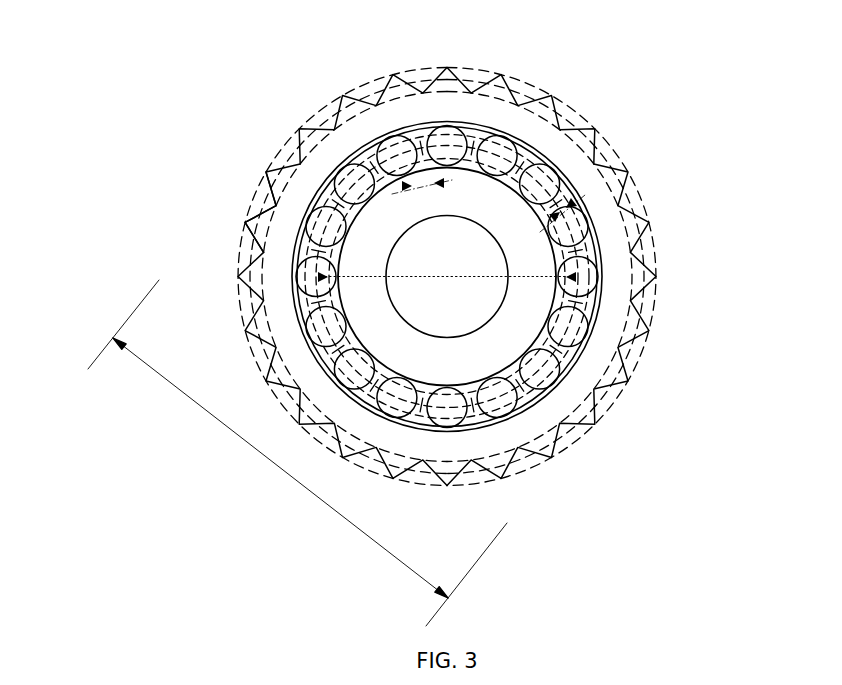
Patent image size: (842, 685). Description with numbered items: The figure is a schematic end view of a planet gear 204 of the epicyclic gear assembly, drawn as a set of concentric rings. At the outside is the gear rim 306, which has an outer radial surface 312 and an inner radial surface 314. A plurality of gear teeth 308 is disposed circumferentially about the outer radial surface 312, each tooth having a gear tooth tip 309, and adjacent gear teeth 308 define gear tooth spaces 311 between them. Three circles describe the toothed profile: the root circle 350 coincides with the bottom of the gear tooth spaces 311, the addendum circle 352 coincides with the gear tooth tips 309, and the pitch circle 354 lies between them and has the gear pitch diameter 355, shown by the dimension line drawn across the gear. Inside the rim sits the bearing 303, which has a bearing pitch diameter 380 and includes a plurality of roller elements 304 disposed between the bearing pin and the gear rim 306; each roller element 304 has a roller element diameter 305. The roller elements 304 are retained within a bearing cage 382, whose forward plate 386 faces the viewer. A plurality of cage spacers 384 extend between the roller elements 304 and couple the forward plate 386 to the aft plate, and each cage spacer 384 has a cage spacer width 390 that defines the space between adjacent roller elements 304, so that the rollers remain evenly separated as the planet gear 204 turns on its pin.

The planet gear 204 is at (144, 62).
The bearing 303 is at (349, 156).
The roller elements 304 is at (515, 152).
The roller element diameter 305 is at (565, 208).
The gear rim 306 is at (514, 125).
The gear teeth 308 is at (258, 222).
The gear tooth tip 309 is at (250, 195).
The gear tooth spaces 311 is at (264, 178).
The outer radial surface 312 is at (645, 330).
The inner radial surface 314 is at (337, 152).
The root circle 350 is at (477, 77).
The addendum circle 352 is at (548, 91).
The pitch circle 354 is at (515, 82).
The gear pitch diameter 355 is at (243, 442).
The bearing pitch diameter 380 is at (447, 280).
The bearing cage 382 is at (297, 238).
The cage spacers 384 is at (282, 146).
The forward plate 386 is at (317, 292).
The cage spacer width 390 is at (430, 192).